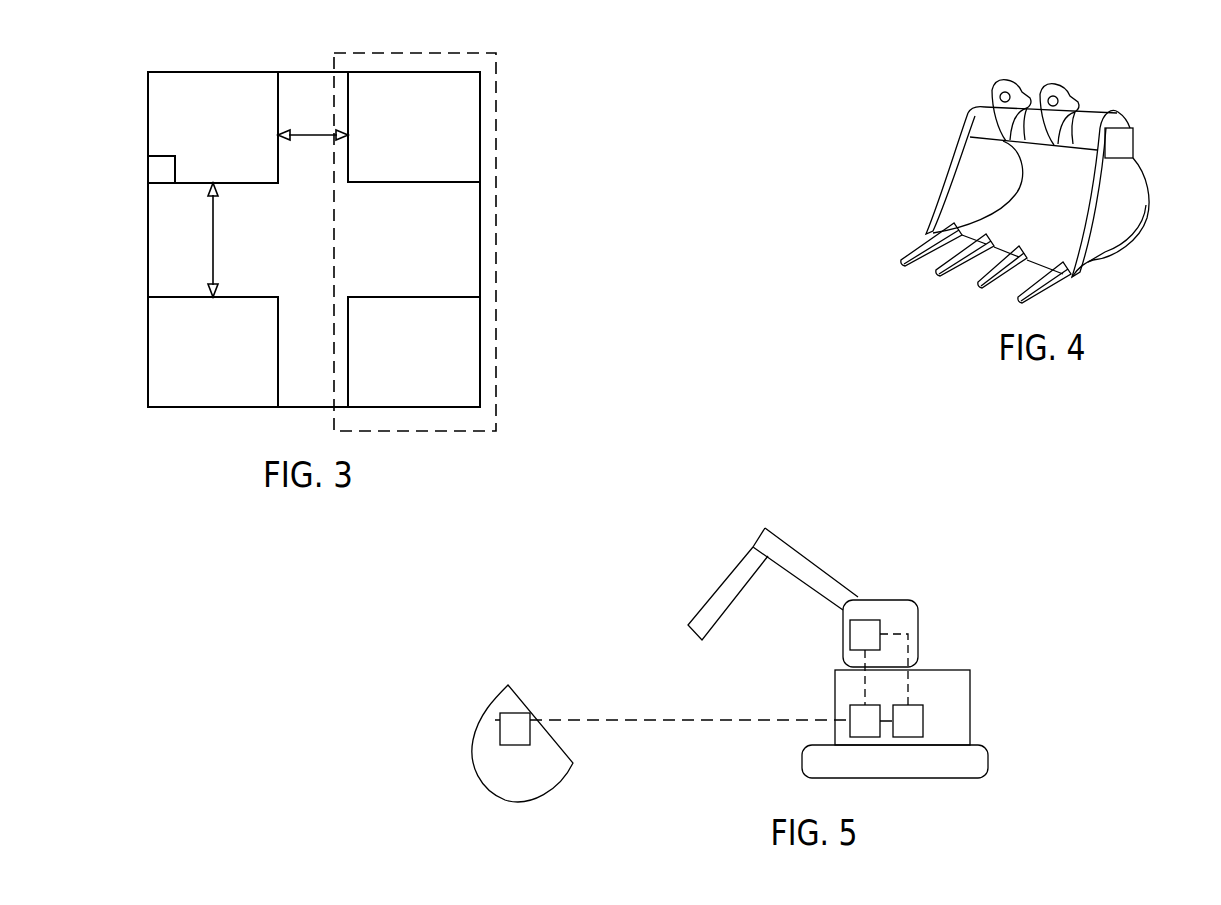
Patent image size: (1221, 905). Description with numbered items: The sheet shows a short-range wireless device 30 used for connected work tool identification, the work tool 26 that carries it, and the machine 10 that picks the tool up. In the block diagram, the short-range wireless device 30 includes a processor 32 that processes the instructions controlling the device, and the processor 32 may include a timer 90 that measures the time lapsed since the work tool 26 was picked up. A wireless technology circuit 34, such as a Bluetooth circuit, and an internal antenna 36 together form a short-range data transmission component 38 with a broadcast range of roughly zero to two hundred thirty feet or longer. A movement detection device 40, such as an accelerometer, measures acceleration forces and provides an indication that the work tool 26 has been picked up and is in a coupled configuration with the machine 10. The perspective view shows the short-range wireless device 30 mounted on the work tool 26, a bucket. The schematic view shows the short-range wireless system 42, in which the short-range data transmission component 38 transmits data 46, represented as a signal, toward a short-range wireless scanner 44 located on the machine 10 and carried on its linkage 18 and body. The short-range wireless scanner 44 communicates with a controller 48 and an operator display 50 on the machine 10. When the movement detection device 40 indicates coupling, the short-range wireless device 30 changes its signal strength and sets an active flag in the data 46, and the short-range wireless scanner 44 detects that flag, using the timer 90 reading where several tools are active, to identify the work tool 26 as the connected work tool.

In FIG. 5, the machine 10 is at (937, 605).
In FIG. 5, the boom and stick linkage 18 is at (788, 522).
In FIG. 4, the work tool 26 is at (1128, 198).
In FIG. 5, the work tool 26 is at (545, 793).
In FIG. 3, the short-range wireless device 30 is at (523, 97).
In FIG. 4, the short-range wireless device 30 is at (1125, 120).
In FIG. 5, the short-range wireless device 30 is at (500, 738).
In FIG. 3, the processor 32 is at (213, 83).
In FIG. 3, the wireless technology circuit 34 is at (408, 87).
In FIG. 3, the internal antenna 36 is at (468, 322).
In FIG. 3, the short-range data transmission component 38 is at (496, 163).
In FIG. 3, the movement detection device 40 is at (148, 333).
In FIG. 5, the short-range wireless system 42 is at (590, 610).
In FIG. 5, the short-range wireless scanner 44 is at (850, 715).
In FIG. 5, the data 46 is at (627, 718).
In FIG. 5, the controller 48 is at (923, 720).
In FIG. 5, the operator display 50 is at (872, 618).
In FIG. 3, the timer 90 is at (148, 172).